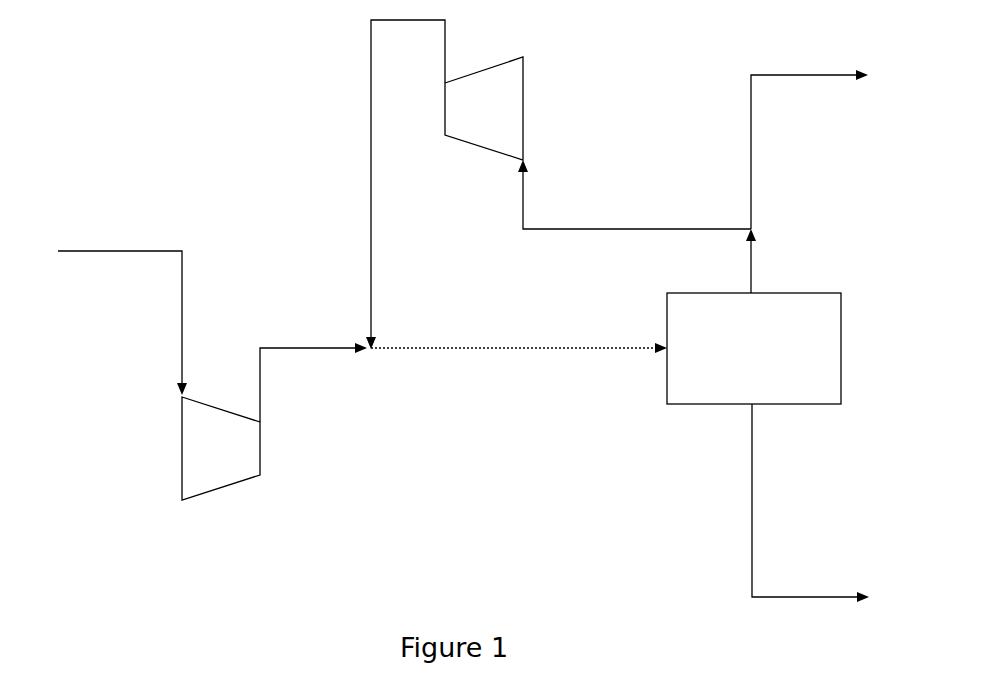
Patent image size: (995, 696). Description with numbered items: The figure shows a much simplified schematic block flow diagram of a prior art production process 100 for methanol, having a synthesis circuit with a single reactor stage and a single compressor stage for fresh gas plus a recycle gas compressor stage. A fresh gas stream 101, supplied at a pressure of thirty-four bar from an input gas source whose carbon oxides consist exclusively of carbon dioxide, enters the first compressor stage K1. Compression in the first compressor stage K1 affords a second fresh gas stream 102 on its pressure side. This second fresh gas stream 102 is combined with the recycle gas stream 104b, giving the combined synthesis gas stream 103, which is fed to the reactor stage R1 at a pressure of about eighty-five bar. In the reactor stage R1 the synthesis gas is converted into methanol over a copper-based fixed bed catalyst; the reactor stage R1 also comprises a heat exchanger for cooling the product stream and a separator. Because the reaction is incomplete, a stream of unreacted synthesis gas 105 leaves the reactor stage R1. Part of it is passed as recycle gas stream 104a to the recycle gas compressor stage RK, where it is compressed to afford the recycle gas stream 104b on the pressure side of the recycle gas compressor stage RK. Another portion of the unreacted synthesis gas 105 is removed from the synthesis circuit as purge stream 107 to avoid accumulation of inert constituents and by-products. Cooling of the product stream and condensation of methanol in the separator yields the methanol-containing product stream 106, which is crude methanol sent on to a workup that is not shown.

The process system 100 is at (105, 49).
The fresh gas stream 101 is at (126, 323).
The first compressor stage K1 is at (221, 448).
The second fresh gas stream 102 is at (307, 382).
The synthesis gas stream 103 is at (519, 348).
The recycle gas stream 104a is at (634, 198).
The recycle gas stream 104b is at (405, 181).
The recycle gas compressor stage RK is at (484, 108).
The reactor stage R1 is at (754, 348).
The stream of unreacted synthesis gas 105 is at (752, 261).
The methanol-containing product stream 106 is at (804, 503).
The purge stream 107 is at (803, 149).